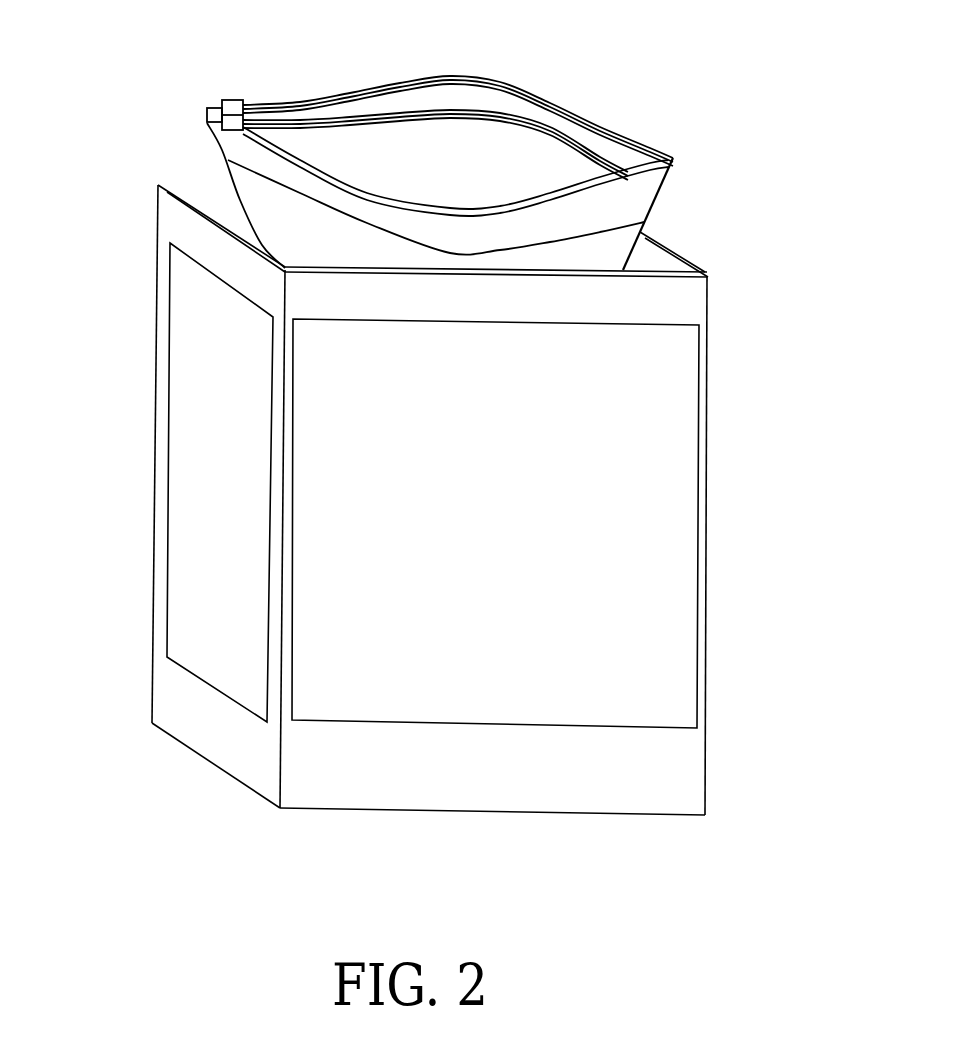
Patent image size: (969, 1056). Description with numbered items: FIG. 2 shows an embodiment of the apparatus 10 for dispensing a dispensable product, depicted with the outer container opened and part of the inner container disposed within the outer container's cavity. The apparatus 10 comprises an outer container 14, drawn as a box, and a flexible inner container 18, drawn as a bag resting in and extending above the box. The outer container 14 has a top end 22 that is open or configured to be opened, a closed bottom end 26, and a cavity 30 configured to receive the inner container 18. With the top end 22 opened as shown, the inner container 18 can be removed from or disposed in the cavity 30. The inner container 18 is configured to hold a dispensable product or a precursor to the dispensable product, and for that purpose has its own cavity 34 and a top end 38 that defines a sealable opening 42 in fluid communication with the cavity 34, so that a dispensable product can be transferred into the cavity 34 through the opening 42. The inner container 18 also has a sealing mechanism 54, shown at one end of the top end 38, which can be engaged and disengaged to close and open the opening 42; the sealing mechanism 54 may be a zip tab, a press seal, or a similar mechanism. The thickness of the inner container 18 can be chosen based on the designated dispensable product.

The apparatus 10 is at (188, 117).
The outer container 14 is at (708, 466).
The inner container 18 is at (620, 130).
The top end 22 is at (650, 235).
The bottom end 26 is at (687, 817).
The cavity 30 is at (215, 200).
The cavity 34 is at (462, 182).
The top end 38 is at (308, 97).
The sealable opening 42 is at (393, 103).
The sealing mechanism 54 is at (232, 100).